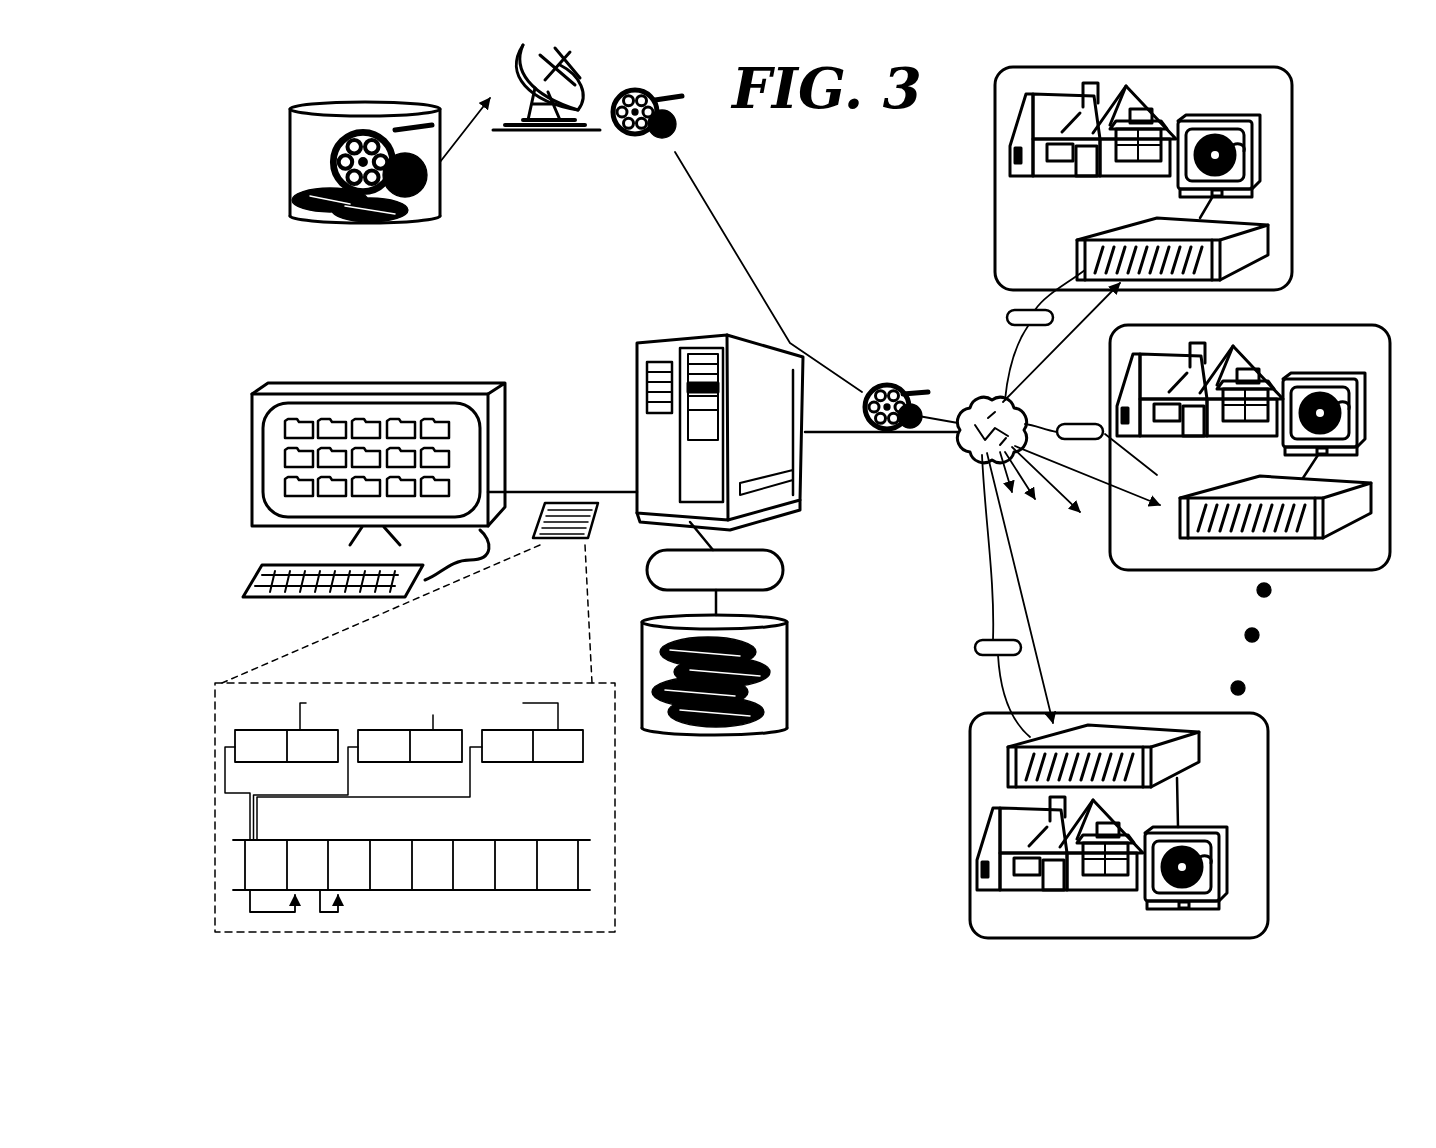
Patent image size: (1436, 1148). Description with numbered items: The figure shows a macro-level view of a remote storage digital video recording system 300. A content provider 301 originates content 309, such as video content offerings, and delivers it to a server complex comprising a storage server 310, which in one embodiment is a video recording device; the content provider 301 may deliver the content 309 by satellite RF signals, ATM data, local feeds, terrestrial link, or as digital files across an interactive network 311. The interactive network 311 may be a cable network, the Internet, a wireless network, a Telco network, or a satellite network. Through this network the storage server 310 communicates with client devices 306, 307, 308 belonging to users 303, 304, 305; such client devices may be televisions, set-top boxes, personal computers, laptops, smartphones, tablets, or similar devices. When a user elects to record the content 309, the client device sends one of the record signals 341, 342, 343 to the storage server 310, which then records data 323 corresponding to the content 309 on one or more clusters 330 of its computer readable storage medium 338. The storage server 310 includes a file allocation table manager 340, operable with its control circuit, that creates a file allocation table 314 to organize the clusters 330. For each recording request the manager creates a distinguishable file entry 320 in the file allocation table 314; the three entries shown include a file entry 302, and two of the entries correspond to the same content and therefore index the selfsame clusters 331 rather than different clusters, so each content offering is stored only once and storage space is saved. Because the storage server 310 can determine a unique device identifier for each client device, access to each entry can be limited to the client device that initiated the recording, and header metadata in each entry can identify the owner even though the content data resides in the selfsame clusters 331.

The remote storage digital video recording system 300 is at (282, 318).
The content provider 301 is at (422, 202).
The file entry 302 is at (357, 466).
The user 303 is at (1096, 178).
The user 304 is at (1250, 428).
The user 305 is at (1152, 825).
The client device 306 is at (1080, 257).
The client device 307 is at (1180, 518).
The client device 308 is at (1180, 757).
The content 309 is at (905, 385).
The storage server 310 is at (637, 407).
The interactive network 311 is at (972, 412).
The file allocation table 314 is at (592, 533).
The distinguishable file entry 320 is at (405, 788).
The data 323 is at (252, 863).
The clusters 330 is at (395, 884).
The selfsame clusters 331 is at (268, 922).
The computer readable storage medium 338 is at (790, 665).
The file allocation table manager 340 is at (785, 569).
The record signal 341 is at (1007, 318).
The record signal 342 is at (1085, 423).
The record signal 343 is at (975, 648).